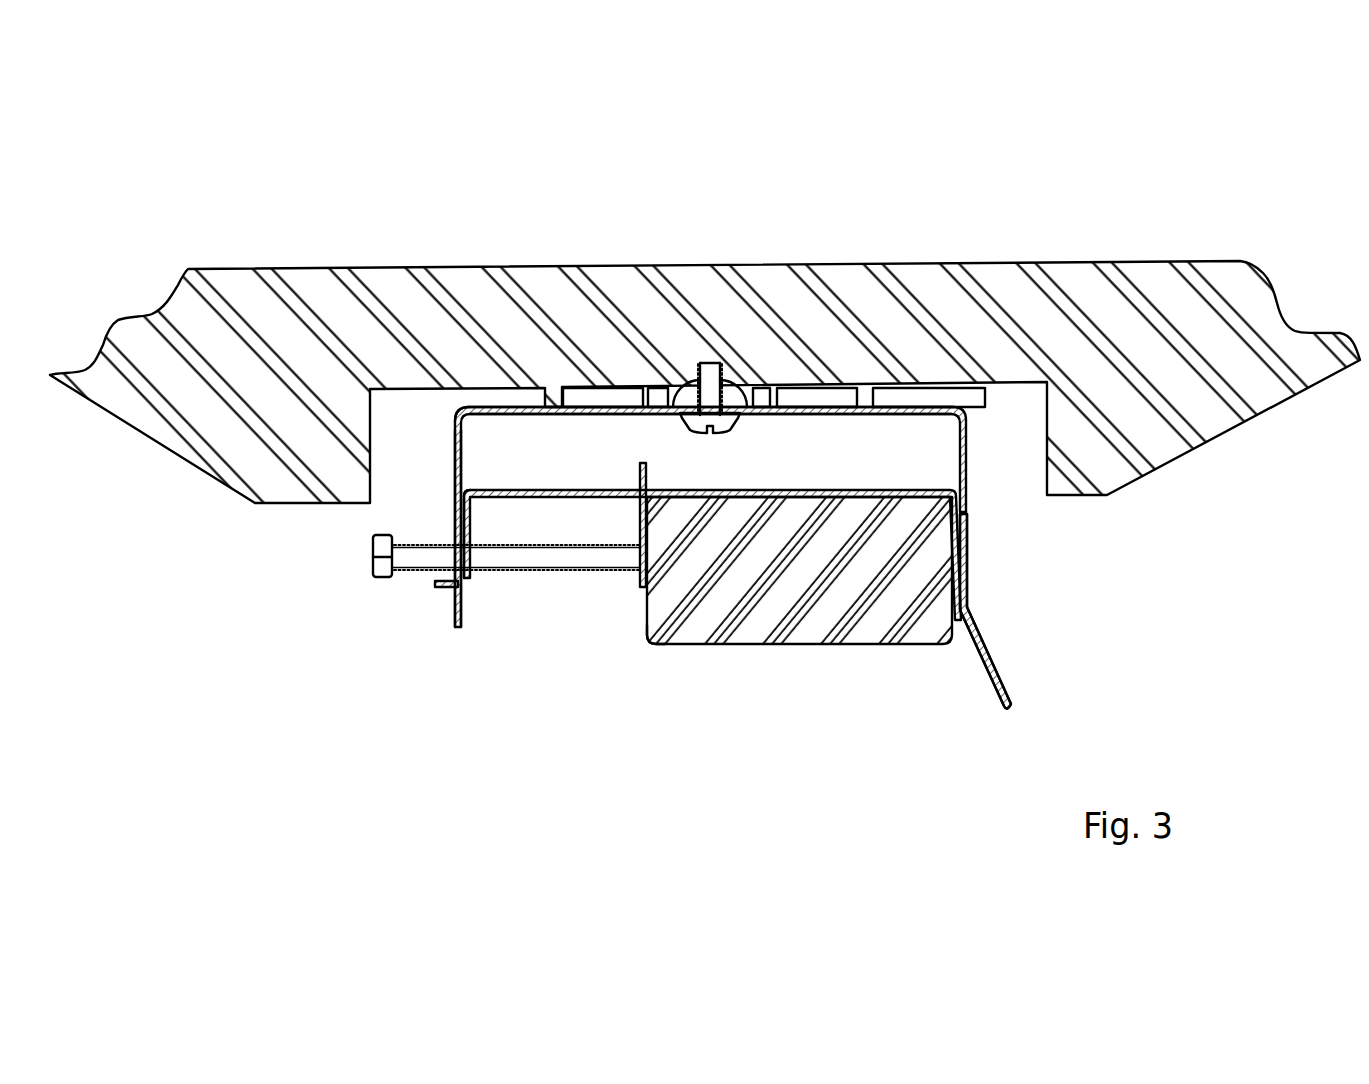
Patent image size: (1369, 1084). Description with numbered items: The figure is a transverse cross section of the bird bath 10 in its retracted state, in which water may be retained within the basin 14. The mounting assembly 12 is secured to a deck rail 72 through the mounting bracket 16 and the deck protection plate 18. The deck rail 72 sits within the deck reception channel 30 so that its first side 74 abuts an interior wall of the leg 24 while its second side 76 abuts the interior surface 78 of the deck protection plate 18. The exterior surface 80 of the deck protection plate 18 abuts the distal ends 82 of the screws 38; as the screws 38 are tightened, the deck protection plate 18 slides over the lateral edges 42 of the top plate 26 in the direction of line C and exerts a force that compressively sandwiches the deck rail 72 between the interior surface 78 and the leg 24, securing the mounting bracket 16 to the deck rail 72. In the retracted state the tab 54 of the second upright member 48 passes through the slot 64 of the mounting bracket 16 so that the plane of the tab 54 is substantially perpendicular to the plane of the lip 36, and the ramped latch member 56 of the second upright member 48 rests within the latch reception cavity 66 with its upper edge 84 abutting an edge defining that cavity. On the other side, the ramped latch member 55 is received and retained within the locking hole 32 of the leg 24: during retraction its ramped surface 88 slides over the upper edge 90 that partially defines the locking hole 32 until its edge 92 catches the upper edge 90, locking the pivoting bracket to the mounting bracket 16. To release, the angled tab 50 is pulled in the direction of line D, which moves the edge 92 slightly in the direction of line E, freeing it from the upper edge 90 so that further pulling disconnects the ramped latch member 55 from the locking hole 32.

The bird bath 10 is at (1268, 490).
The mounting assembly 12 is at (409, 462).
The basin 14 is at (1158, 275).
The mounting bracket 16 is at (746, 527).
The deck protection plate 18 is at (640, 578).
The leg 24 is at (965, 588).
The top plate 26 is at (862, 488).
The deck reception channel 30 is at (551, 613).
The locking hole 32 is at (900, 588).
The lip 36 is at (437, 585).
The screws 38 is at (400, 571).
The lateral edges 42 is at (503, 490).
The second upright member 48 is at (462, 452).
The angled tab 50 is at (970, 626).
The tab 54 is at (457, 627).
The ramped latch member 55 is at (963, 537).
The ramped latch member 56 is at (460, 537).
The slot 64 is at (463, 570).
The latch reception cavity 66 is at (470, 533).
The deck rail 72 is at (832, 672).
The first side 74 is at (955, 647).
The second side 76 is at (647, 642).
The interior surface 78 is at (650, 523).
The exterior surface 80 is at (640, 520).
The distal ends 82 is at (637, 570).
The upper edge 84 is at (457, 515).
The ramped surface 88 is at (967, 577).
The upper edge 90 is at (960, 513).
The edge 92 is at (963, 523).
The line C is at (332, 557).
The line D is at (1082, 664).
The line E is at (1000, 424).